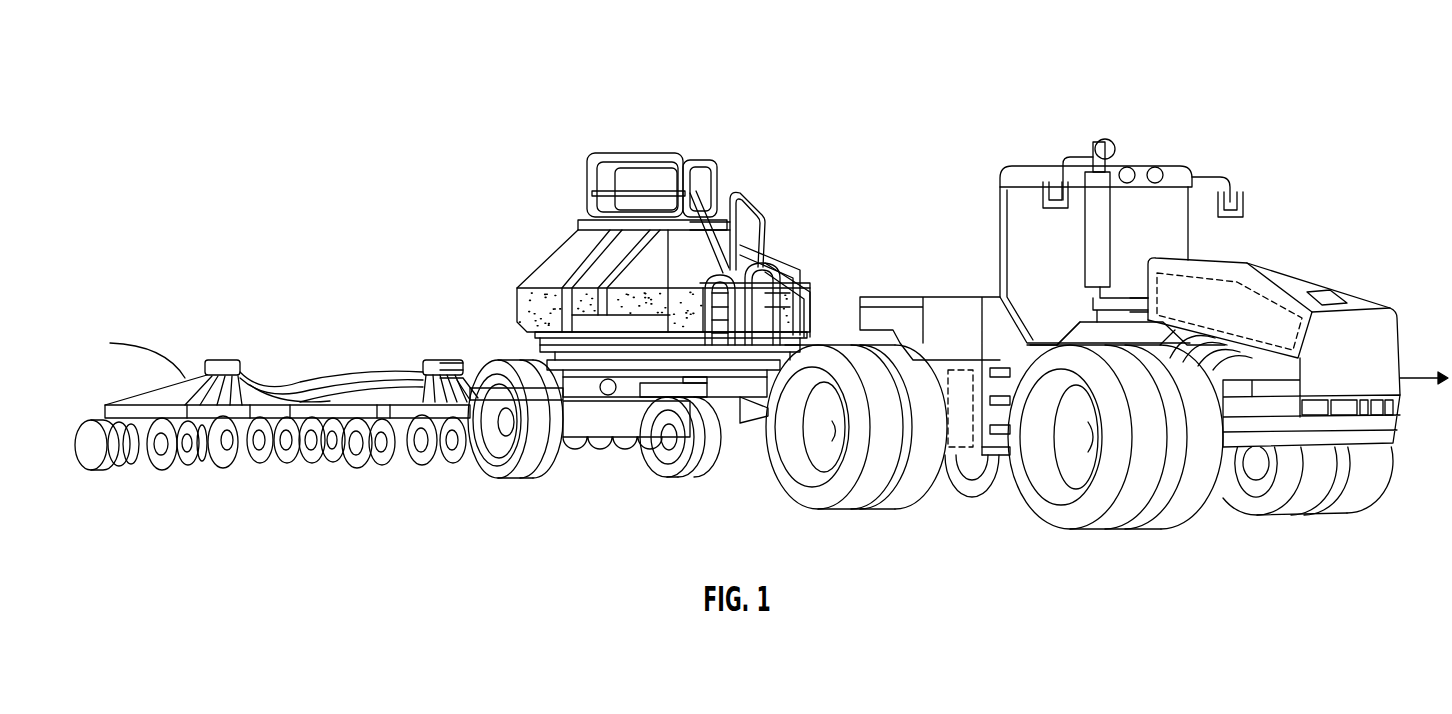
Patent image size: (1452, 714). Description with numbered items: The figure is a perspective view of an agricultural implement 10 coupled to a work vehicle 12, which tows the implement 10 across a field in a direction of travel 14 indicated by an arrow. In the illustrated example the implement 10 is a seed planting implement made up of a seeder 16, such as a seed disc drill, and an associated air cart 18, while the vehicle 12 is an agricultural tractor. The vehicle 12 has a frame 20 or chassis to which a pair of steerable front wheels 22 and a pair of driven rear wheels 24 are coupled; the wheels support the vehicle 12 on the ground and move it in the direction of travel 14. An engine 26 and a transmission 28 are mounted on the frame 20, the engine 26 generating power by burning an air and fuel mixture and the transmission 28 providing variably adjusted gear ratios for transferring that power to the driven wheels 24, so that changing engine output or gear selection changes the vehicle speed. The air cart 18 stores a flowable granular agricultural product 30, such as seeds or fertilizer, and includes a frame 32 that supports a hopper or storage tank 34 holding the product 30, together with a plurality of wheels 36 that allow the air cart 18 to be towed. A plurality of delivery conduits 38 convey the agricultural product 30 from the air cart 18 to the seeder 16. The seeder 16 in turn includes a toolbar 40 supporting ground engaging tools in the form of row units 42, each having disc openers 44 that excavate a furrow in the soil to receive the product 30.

The agricultural implement 10 is at (243, 180).
The work vehicle 12 is at (1245, 126).
The direction of travel 14 is at (1416, 372).
The seeder 16 is at (178, 304).
The air cart 18 is at (640, 86).
The frame 20 is at (1000, 465).
The front wheels 22 is at (1142, 495).
The rear wheels 24 is at (865, 498).
The engine 26 is at (1240, 280).
The transmission 28 is at (960, 368).
The agricultural product 30 is at (516, 303).
The frame 32 is at (660, 398).
The storage tank 34 is at (560, 260).
The wheels 36 is at (543, 462).
The delivery conduits 38 is at (137, 405).
The toolbar 40 is at (343, 402).
The row units 42 is at (404, 472).
The disc openers 44 is at (228, 460).